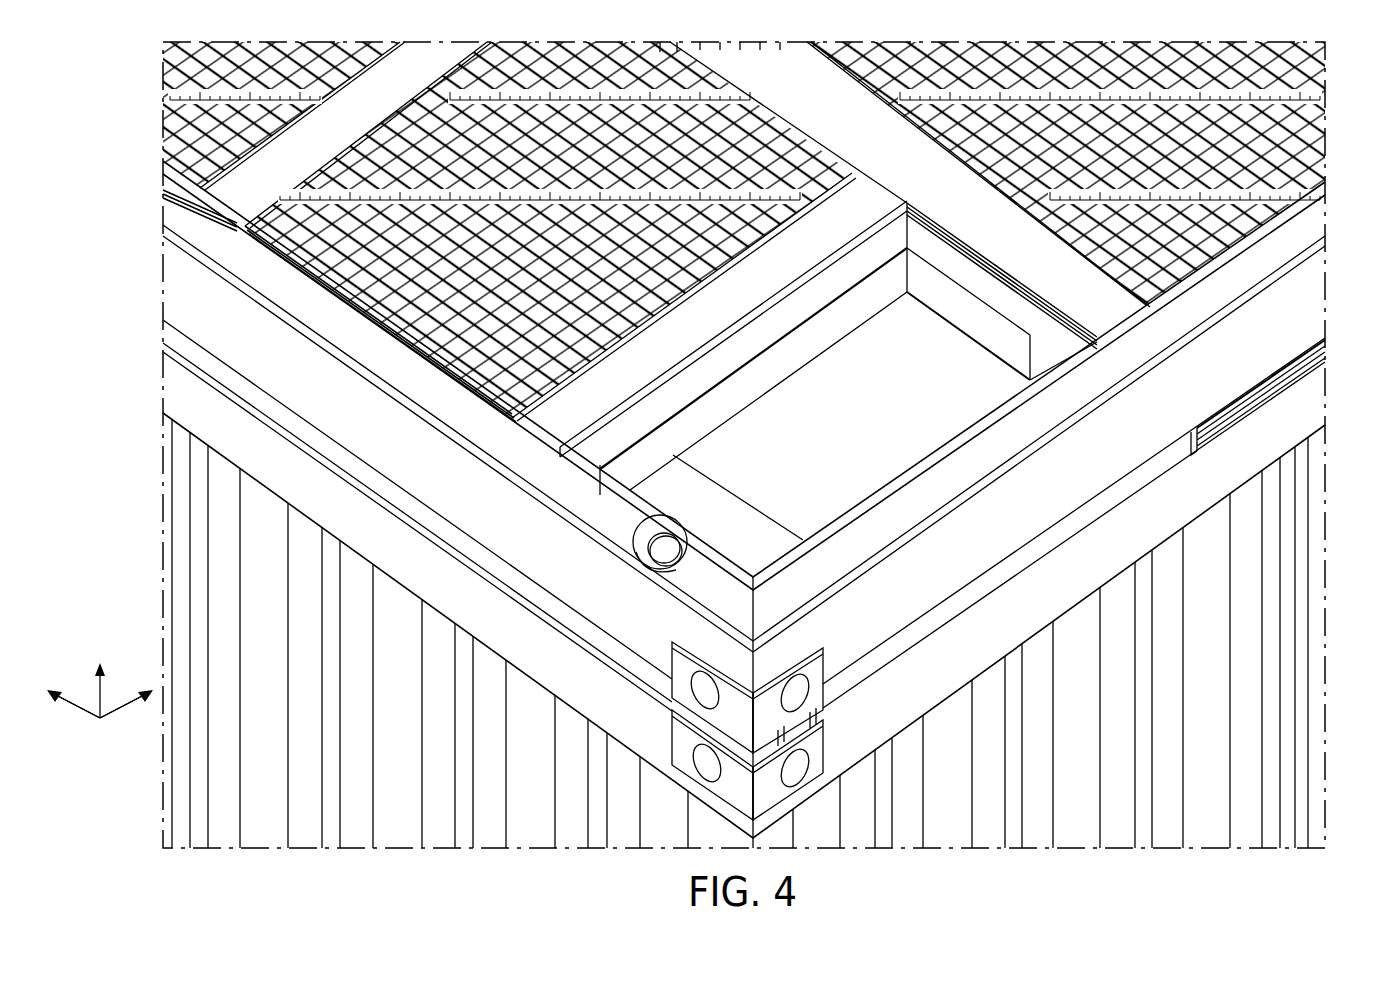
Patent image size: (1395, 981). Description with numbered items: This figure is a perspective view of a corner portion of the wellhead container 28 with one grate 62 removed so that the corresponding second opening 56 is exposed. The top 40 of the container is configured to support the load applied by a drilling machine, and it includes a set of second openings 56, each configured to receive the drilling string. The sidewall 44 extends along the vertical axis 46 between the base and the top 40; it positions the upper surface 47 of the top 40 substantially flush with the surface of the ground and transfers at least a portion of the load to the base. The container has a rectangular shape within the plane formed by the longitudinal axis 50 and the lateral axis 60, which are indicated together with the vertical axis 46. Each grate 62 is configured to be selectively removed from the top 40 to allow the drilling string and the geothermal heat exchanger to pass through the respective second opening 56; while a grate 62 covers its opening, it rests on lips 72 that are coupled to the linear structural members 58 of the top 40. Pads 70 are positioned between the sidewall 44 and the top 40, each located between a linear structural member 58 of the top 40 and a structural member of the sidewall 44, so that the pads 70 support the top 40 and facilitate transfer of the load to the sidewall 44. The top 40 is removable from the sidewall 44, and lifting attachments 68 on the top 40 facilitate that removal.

The wellhead container 28 is at (744, 658).
The top 40 is at (768, 102).
The sidewall 44 is at (1081, 676).
The vertical axis 46 is at (100, 674).
The upper surface 47 is at (1020, 245).
The longitudinal axis 50 is at (104, 724).
The second opening 56 is at (910, 324).
The linear structural member 58 is at (600, 468).
The lateral axis 60 is at (98, 723).
The grate 62 is at (400, 341).
The lifting attachment 68 is at (670, 518).
The pad 70 is at (1260, 396).
The lip 72 is at (793, 317).